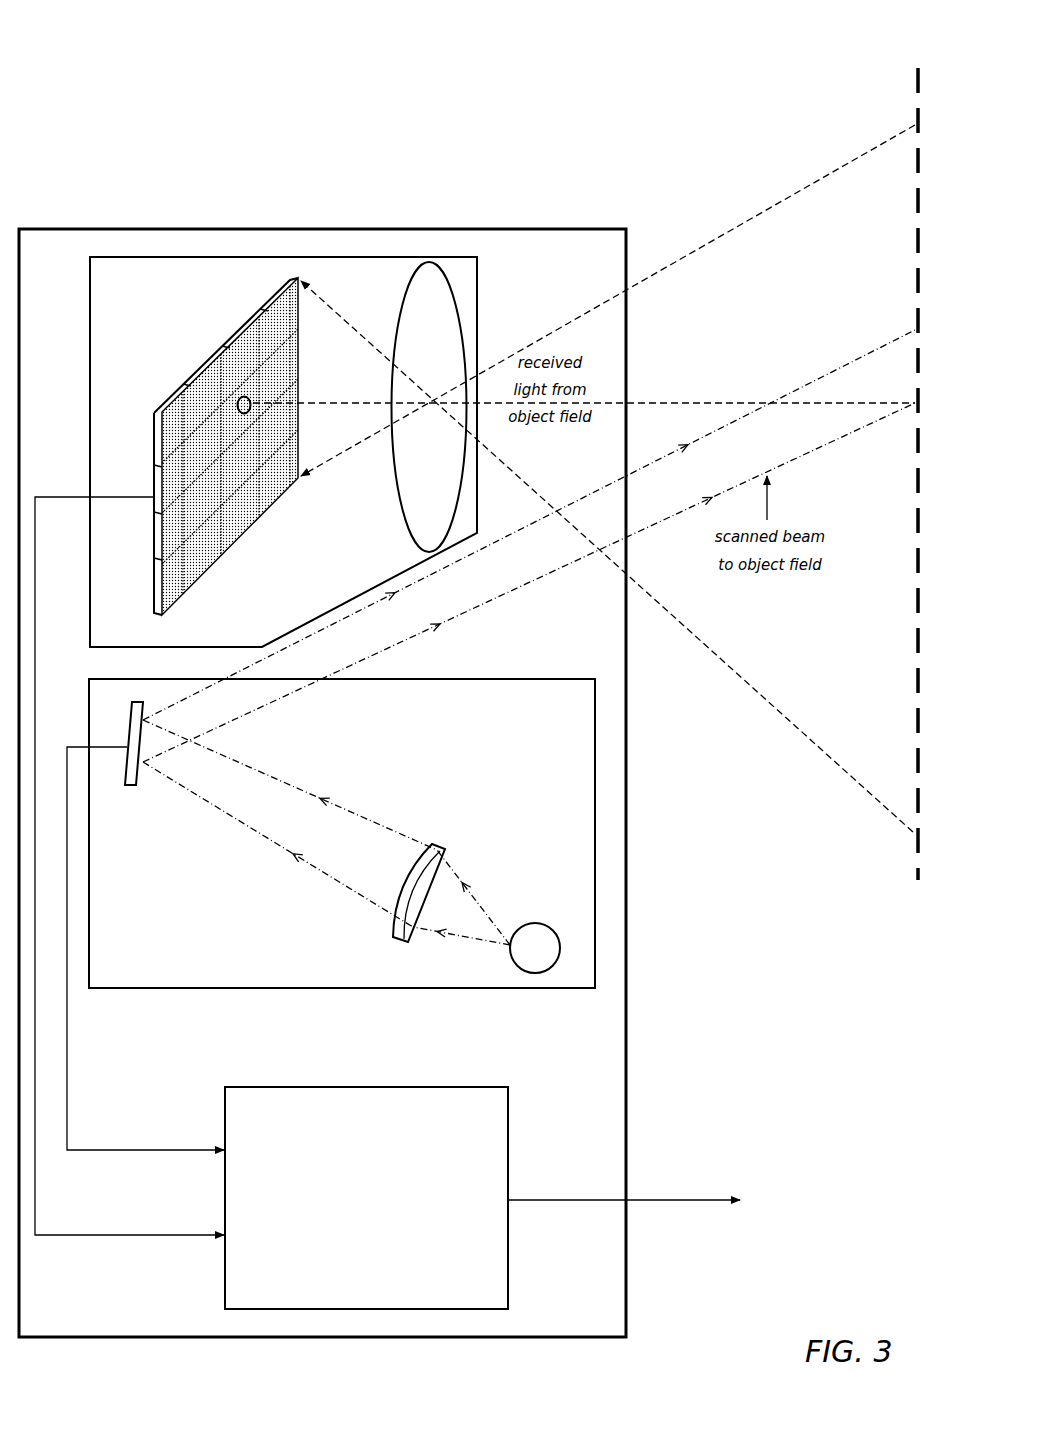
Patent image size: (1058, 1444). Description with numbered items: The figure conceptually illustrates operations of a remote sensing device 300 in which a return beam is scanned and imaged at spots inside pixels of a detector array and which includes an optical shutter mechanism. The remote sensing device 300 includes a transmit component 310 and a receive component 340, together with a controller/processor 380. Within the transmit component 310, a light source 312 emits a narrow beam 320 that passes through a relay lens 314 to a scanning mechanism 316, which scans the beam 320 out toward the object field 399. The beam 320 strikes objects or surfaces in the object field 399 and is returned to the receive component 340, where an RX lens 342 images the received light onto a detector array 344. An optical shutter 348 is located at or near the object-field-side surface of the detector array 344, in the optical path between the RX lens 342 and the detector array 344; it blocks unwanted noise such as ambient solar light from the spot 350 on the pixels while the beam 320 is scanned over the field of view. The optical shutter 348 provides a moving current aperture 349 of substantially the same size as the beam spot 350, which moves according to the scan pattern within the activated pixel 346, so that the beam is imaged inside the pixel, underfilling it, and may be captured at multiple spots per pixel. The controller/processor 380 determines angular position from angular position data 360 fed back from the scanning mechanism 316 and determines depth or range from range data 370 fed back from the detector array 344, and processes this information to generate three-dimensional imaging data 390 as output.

The remote sensing device 300 is at (322, 783).
The transmit (TX) component 310 is at (342, 833).
The light source 312 is at (563, 947).
The relay lens 314 is at (444, 843).
The scanning mechanism 316 is at (134, 792).
The beam 320 is at (529, 637).
The receive (RX) component 340 is at (283, 452).
The RX lens 342 is at (447, 272).
The detector array 344 is at (223, 335).
The activated pixel 346 is at (218, 394).
The optical shutter 348 is at (228, 555).
The current aperture 349 is at (249, 388).
The spot 350 is at (243, 393).
The angular position feedback 360 is at (145, 961).
The range data feedback 370 is at (129, 878).
The controller/processor 380 is at (366, 1198).
The 3D imaging data 390 is at (660, 1197).
The object field 399 is at (890, 445).